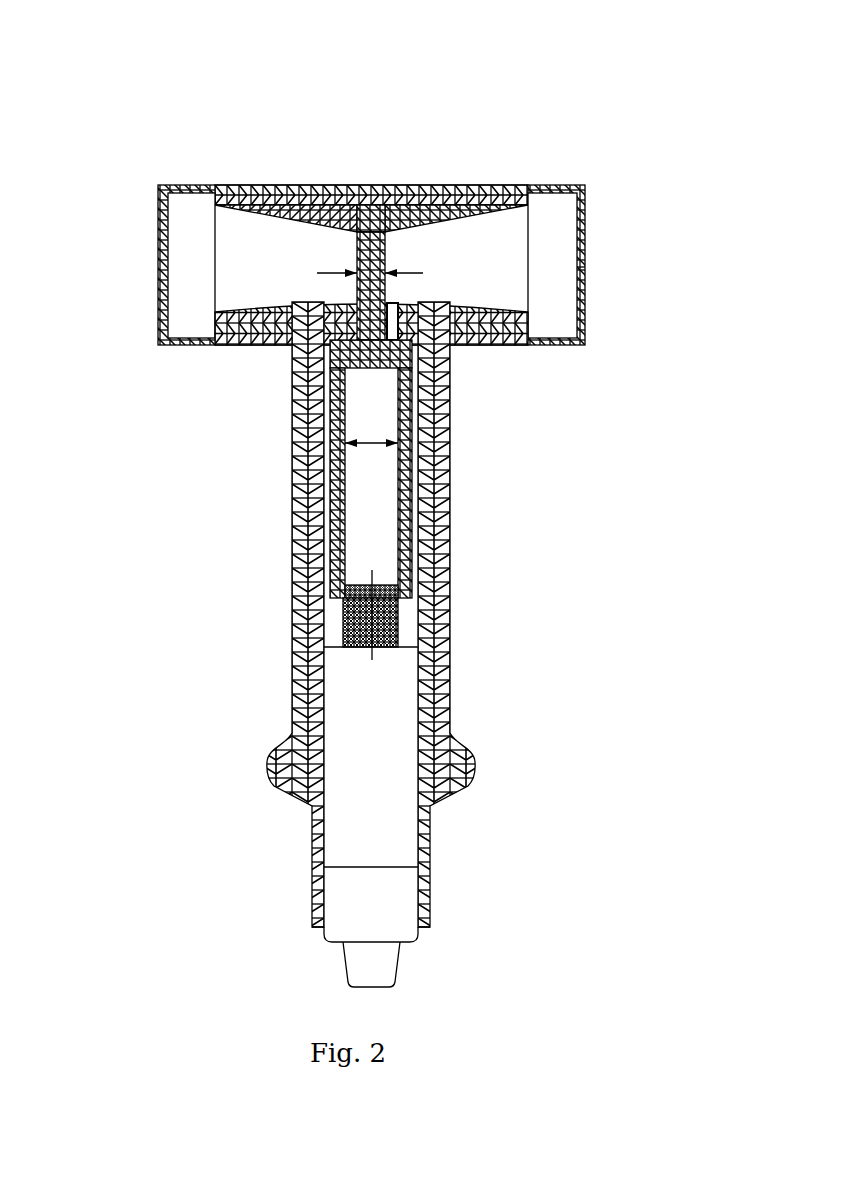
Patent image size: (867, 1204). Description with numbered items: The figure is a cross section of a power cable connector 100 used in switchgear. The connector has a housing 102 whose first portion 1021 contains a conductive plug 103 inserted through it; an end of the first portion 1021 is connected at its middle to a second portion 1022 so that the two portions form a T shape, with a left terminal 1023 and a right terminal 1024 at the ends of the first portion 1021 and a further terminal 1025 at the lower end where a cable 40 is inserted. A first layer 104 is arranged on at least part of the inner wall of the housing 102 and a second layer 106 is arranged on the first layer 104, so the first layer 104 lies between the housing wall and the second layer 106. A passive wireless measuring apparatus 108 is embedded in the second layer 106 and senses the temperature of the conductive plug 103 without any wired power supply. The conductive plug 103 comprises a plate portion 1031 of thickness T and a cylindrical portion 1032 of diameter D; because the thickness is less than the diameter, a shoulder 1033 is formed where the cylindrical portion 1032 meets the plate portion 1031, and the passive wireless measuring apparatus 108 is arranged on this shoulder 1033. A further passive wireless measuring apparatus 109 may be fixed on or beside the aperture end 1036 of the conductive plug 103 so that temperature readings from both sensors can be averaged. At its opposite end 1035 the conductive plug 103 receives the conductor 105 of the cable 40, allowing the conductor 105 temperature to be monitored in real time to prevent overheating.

The power cable connector 100 is at (238, 98).
The housing 102 is at (128, 503).
The conductive plug 103 is at (250, 508).
The second portion 1022 is at (247, 185).
The left terminal 1023 is at (158, 320).
The right terminal 1024 is at (585, 328).
The further passive wireless measuring apparatus 109 is at (365, 232).
The plate portion 1031 is at (352, 232).
The aperture end 1036 is at (388, 236).
The shoulder 1033 is at (342, 337).
The passive wireless measuring apparatus 108 is at (398, 326).
The first layer 104 is at (412, 448).
The cylindrical portion 1032 is at (355, 483).
The end 1035 is at (385, 563).
The conductor 105 is at (353, 637).
The first portion 1021 is at (292, 593).
The second layer 106 is at (422, 513).
The terminal 1025 is at (422, 928).
The cable 40 is at (347, 833).